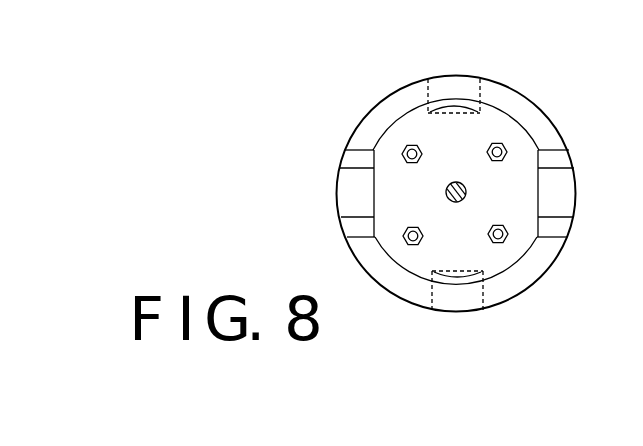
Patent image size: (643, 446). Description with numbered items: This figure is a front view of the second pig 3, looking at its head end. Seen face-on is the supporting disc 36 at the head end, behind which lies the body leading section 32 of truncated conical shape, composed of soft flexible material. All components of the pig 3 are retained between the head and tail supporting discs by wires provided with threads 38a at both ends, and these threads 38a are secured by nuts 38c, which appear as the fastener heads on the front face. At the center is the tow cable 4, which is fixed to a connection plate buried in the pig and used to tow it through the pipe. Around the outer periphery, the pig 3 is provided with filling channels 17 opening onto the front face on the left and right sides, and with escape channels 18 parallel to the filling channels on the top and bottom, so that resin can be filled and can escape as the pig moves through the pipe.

The second pig 3 is at (580, 141).
The tow cable 4 is at (460, 202).
The filling channels 17 is at (342, 193).
The escape channels 18 is at (480, 111).
The body leading section 32 is at (397, 112).
The supporting disc 36 is at (502, 133).
The threads 38a is at (421, 155).
The nuts 38c is at (411, 229).